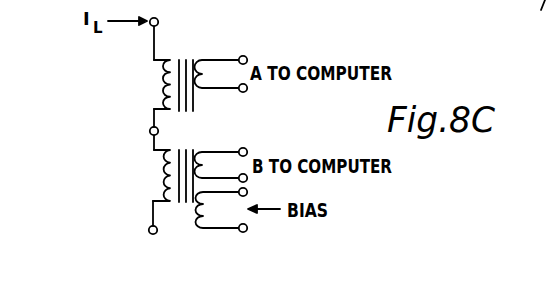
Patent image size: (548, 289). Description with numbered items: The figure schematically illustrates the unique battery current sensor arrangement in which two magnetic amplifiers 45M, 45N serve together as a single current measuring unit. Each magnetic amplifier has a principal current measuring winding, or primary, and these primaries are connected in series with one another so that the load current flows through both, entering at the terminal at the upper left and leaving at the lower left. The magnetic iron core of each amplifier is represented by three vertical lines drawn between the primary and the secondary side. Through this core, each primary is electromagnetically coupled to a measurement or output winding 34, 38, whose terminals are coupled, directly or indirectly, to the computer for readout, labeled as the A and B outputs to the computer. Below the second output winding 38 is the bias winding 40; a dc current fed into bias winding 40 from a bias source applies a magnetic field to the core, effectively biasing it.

The measurement or output winding 34 is at (202, 57).
The measurement or output winding 38 is at (203, 149).
The bias winding 40 is at (204, 228).
The magnetic amplifier 45M is at (142, 85).
The magnetic amplifier 45N is at (142, 175).